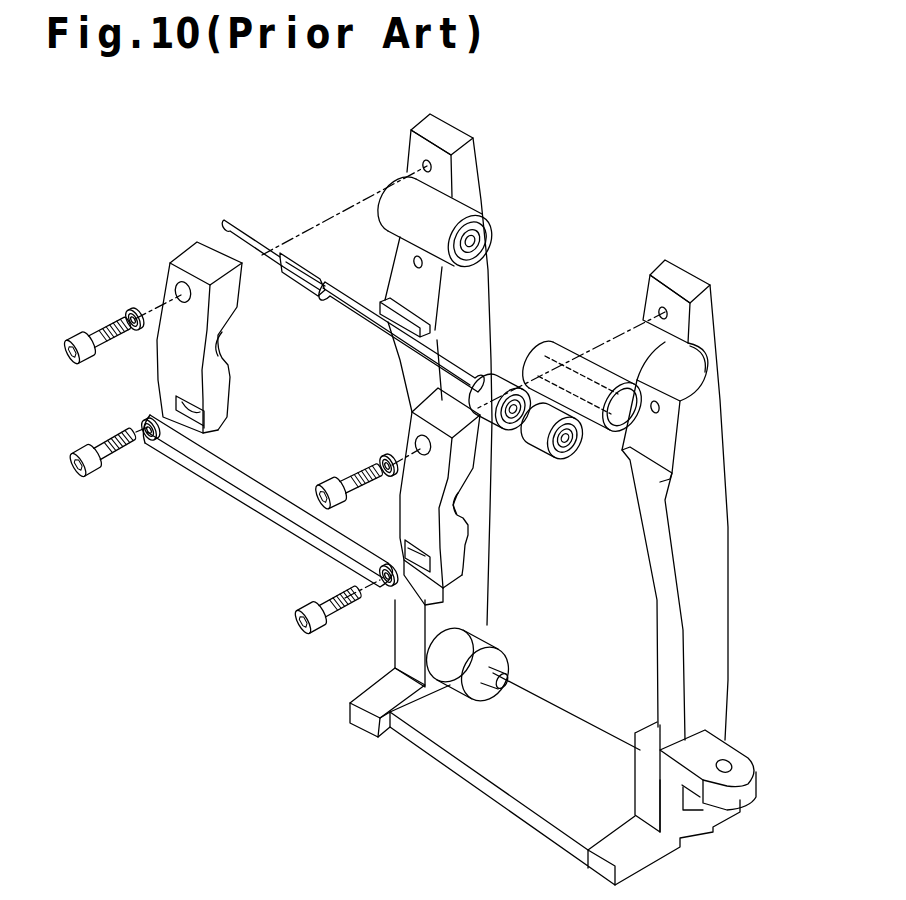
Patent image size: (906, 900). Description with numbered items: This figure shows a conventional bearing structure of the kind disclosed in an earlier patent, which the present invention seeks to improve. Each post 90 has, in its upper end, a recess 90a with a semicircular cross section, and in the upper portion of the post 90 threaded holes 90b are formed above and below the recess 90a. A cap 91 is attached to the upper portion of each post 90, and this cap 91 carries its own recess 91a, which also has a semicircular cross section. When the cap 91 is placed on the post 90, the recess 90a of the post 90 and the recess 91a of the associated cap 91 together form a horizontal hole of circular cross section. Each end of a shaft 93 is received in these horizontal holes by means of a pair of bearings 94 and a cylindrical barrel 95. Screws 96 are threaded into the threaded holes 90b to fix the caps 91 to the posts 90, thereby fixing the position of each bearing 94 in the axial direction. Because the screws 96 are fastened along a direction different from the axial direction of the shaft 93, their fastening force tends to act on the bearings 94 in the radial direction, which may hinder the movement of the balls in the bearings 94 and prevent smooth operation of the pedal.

The post 90 is at (493, 530).
The recess 90a is at (700, 366).
The threaded holes 90b is at (658, 310).
The cap 91 is at (173, 262).
The recess 91a is at (218, 344).
The shaft 93 is at (340, 298).
The bearings 94 is at (488, 240).
The cylindrical barrel 95 is at (483, 222).
The screws 96 is at (66, 358).